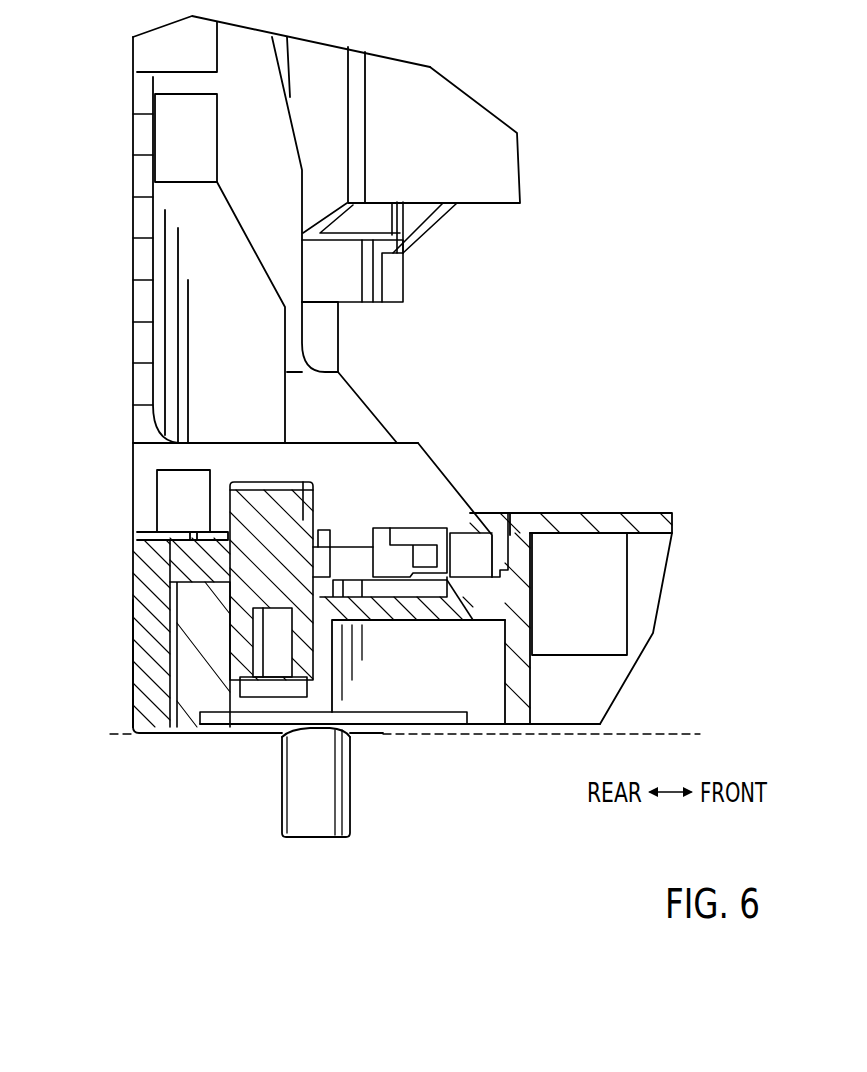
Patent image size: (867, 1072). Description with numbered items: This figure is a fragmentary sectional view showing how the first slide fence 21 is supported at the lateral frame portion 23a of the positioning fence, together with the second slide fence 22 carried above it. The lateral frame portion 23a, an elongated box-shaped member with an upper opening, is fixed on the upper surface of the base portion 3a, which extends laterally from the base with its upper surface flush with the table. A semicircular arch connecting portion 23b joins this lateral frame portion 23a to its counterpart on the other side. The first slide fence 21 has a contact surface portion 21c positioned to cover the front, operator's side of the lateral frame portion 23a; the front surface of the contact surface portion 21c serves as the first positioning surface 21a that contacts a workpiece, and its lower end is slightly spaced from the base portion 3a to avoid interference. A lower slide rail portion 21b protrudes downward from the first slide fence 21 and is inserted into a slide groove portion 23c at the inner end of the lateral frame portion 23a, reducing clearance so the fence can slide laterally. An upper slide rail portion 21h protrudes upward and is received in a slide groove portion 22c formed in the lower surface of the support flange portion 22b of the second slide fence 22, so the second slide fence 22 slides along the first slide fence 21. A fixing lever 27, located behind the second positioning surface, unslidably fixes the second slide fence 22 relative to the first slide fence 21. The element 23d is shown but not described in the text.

The base portion 3a is at (647, 735).
The first slide fence 21 is at (184, 556).
The first positioning surface 21a is at (133, 658).
The lower slide rail portion 21b is at (318, 500).
The contact surface portion 21c is at (150, 700).
The upper slide rail portion 21h is at (262, 492).
The second slide fence 22 is at (210, 330).
The support flange portion 22b is at (257, 443).
The slide groove portion 22c is at (240, 627).
The lateral frame portion 23a is at (203, 663).
The semicircular arch connecting portion 23b is at (612, 523).
The slide groove portion 23c is at (373, 547).
The pin of chassis 23d is at (320, 788).
The fixing lever 27 is at (450, 158).